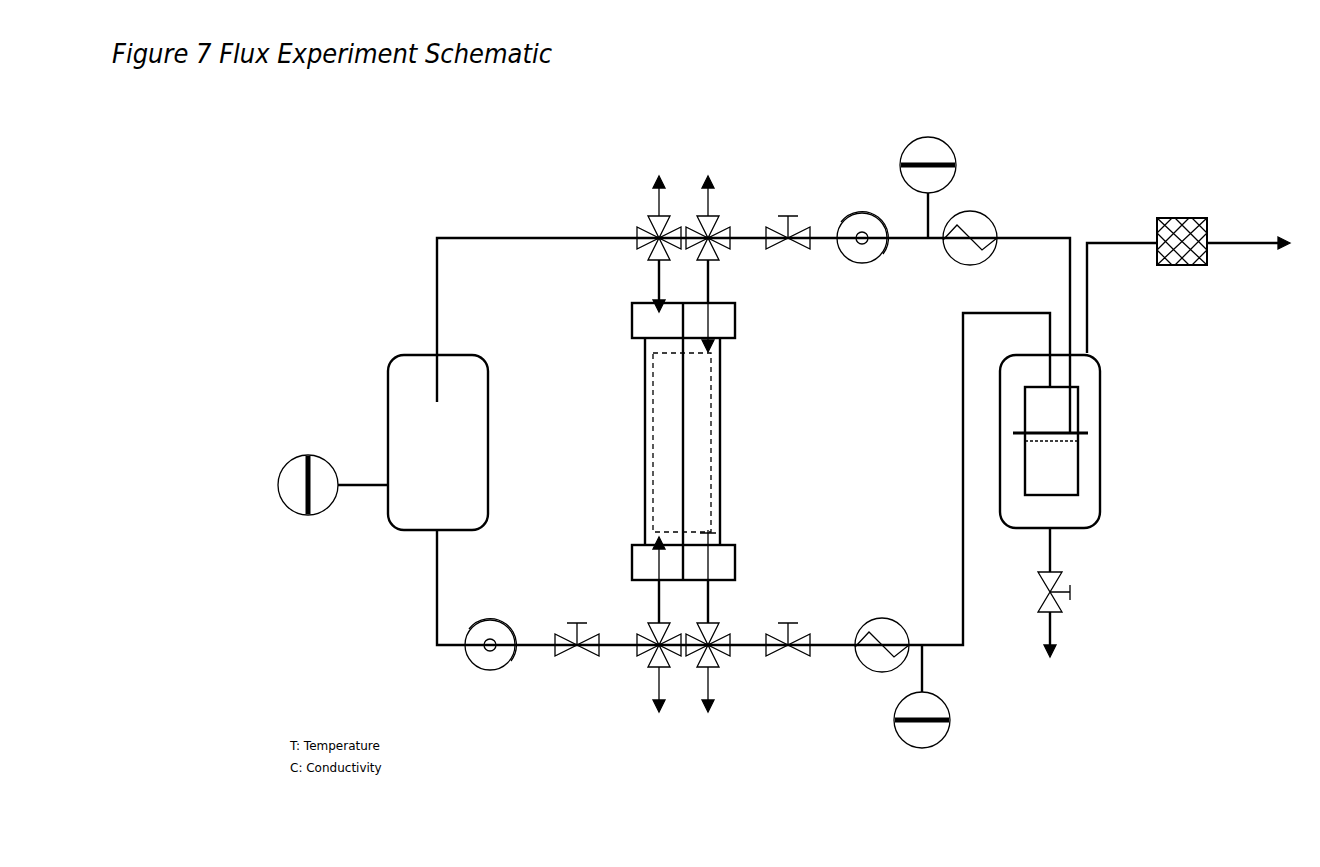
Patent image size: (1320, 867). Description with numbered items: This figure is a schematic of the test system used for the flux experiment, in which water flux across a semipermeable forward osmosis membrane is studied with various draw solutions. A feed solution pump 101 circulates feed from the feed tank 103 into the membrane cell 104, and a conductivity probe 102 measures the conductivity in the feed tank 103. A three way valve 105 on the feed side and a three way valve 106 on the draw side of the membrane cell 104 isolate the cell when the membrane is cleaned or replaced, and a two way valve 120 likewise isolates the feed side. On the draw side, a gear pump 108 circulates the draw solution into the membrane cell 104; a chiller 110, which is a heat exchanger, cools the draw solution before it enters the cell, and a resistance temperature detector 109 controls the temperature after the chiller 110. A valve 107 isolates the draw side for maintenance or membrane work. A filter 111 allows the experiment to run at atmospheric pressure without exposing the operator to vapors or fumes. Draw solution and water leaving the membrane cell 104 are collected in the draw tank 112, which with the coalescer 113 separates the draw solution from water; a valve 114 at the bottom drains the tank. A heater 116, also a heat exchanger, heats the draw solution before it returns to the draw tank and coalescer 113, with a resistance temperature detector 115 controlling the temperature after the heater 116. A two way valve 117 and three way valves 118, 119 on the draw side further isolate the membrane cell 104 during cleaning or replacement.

The feed solution pump 101 is at (490, 672).
The conductivity probe 102 is at (307, 516).
The feed tank 103 is at (388, 402).
The membrane cell 104 is at (645, 385).
The three way valve 105 is at (650, 222).
The three way valve 106 is at (716, 222).
The valve 107 is at (790, 216).
The gear pump 108 is at (860, 212).
The resistance temperature detector 109 is at (930, 137).
The chiller 110 is at (978, 213).
The filter 111 is at (1183, 218).
The draw tank 112 is at (1100, 408).
The coalescer 113 is at (1080, 474).
The valve 114 is at (1075, 592).
The resistance temperature detector 115 is at (950, 735).
The heater 116 is at (876, 672).
The two way valve 117 is at (788, 668).
The three way valve 118 is at (716, 668).
The three way valve 119 is at (650, 668).
The two way valve 120 is at (573, 668).